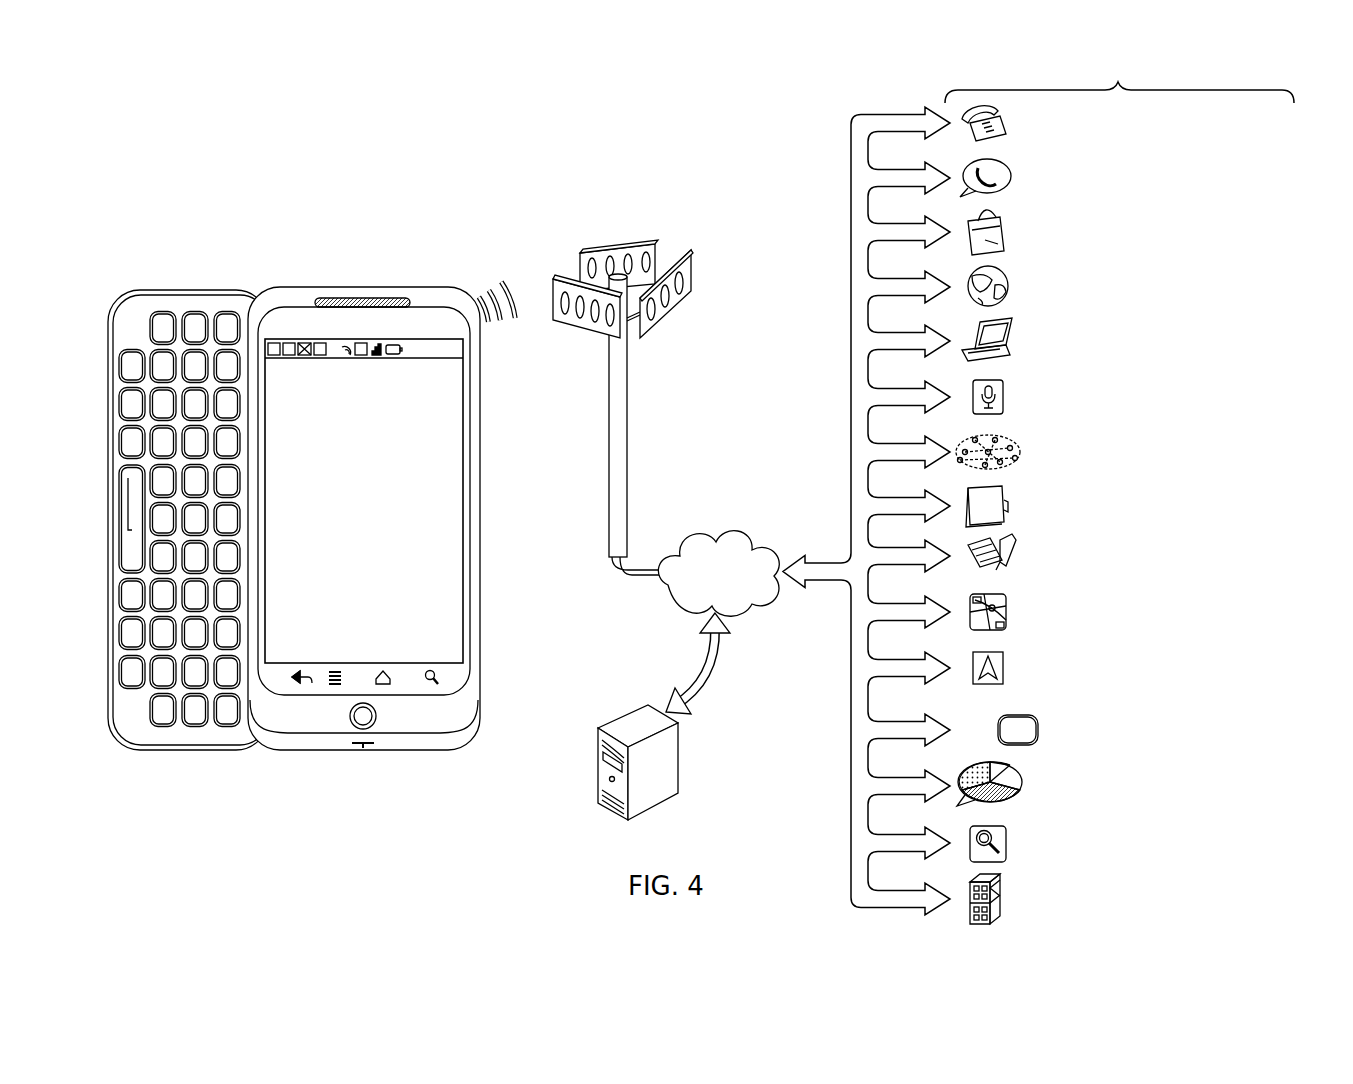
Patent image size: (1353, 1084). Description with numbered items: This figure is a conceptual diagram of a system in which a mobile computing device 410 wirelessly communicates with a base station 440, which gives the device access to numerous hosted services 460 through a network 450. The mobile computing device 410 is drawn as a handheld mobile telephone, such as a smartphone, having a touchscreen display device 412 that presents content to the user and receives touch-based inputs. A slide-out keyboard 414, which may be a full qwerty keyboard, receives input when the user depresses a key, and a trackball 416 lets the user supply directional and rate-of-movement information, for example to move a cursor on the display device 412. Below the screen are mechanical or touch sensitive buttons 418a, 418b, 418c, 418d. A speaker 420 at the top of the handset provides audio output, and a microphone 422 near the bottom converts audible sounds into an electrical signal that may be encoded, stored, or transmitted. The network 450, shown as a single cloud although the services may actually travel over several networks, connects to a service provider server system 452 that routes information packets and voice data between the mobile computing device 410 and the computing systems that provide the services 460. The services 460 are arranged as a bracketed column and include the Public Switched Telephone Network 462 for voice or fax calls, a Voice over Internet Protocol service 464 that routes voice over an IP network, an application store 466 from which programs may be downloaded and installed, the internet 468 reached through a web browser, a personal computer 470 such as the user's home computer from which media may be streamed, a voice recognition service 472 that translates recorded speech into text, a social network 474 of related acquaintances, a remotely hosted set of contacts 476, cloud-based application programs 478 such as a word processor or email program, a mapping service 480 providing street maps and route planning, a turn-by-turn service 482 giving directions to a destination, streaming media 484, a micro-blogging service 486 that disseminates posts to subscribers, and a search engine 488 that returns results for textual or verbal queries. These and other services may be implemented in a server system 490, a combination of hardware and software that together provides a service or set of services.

The mobile computing device 410 is at (422, 228).
The touchscreen display device 412 is at (481, 505).
The keyboard 414 is at (212, 290).
The trackball 416 is at (378, 716).
The button 418a is at (298, 668).
The button 418b is at (336, 670).
The button 418c is at (384, 668).
The button 418d is at (432, 670).
The speaker 420 is at (372, 297).
The microphone 422 is at (363, 749).
The base station 440 is at (676, 215).
The network 450 is at (718, 533).
The server system 452 is at (682, 762).
The hosted services 460 is at (1038, 493).
The Public Switched Telephone Network 462 is at (1008, 126).
The Voice over Internet Protocol service 464 is at (1008, 181).
The application store 466 is at (1008, 235).
The internet 468 is at (1008, 290).
The personal computer 470 is at (1008, 344).
The voice recognition service 472 is at (1008, 400).
The social network 474 is at (1008, 454).
The contacts 476 is at (1008, 508).
The cloud-based application programs 478 is at (1008, 558).
The mapping service 480 is at (1008, 614).
The turn-by-turn service 482 is at (1008, 670).
The streaming media 484 is at (1021, 720).
The micro-blogging service 486 is at (1008, 788).
The search engine 488 is at (1008, 844).
The server system 490 is at (1008, 900).